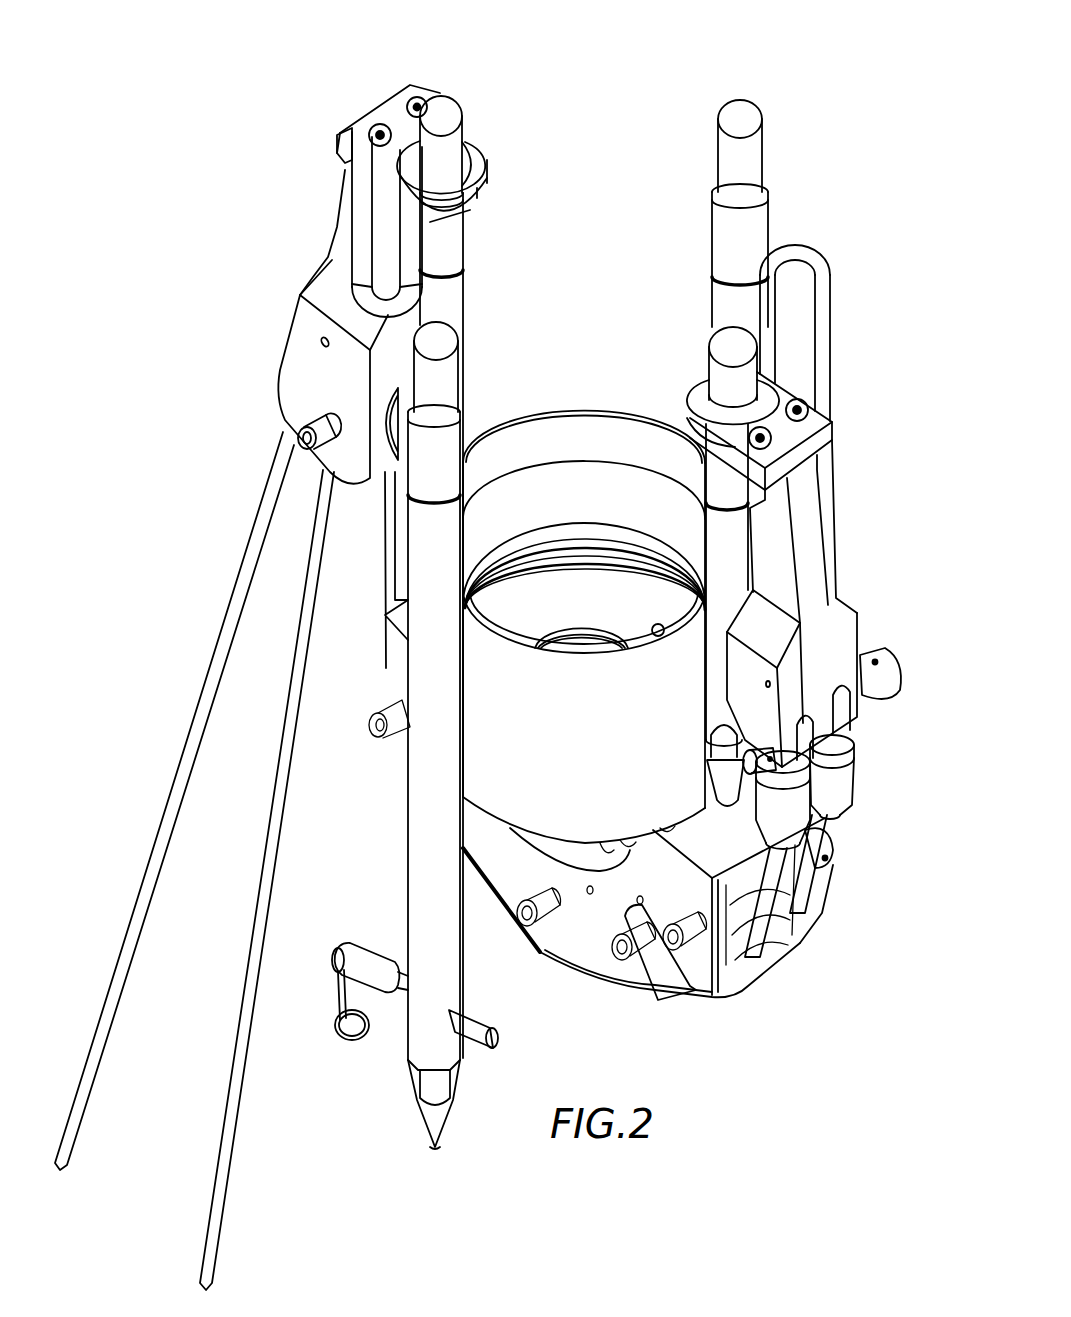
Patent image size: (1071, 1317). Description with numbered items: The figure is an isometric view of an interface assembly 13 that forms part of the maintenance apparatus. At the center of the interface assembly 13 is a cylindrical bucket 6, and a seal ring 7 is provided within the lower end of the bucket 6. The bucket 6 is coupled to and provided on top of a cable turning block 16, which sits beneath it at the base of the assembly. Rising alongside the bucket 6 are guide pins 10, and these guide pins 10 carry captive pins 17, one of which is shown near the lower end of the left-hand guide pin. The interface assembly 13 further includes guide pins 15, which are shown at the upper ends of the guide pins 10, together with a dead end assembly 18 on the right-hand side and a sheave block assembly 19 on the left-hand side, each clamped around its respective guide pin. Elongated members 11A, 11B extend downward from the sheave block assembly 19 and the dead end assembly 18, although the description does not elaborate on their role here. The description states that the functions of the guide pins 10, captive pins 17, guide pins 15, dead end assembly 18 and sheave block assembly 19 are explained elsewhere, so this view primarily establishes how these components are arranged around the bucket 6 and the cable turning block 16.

The interface assembly 13 is at (800, 102).
The cylindrical bucket 6 is at (537, 805).
The seal ring 7 is at (573, 556).
The guide pins 10 is at (753, 152).
The guide pins 15 is at (455, 135).
The sheave block assembly 19 is at (303, 319).
The dead end assembly 18 is at (845, 632).
The first rod 11A is at (228, 624).
The second rod 11B is at (232, 1108).
The cable turning block 16 is at (705, 975).
The captive pins 17 is at (373, 957).